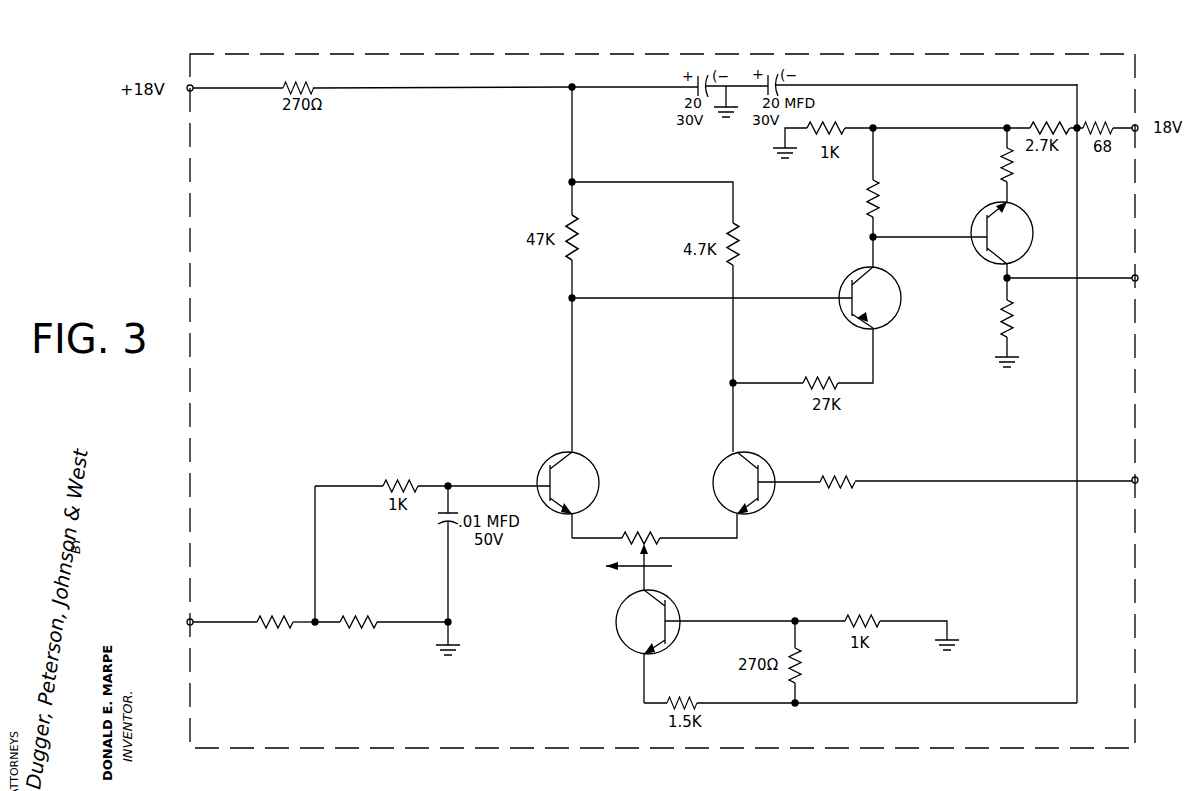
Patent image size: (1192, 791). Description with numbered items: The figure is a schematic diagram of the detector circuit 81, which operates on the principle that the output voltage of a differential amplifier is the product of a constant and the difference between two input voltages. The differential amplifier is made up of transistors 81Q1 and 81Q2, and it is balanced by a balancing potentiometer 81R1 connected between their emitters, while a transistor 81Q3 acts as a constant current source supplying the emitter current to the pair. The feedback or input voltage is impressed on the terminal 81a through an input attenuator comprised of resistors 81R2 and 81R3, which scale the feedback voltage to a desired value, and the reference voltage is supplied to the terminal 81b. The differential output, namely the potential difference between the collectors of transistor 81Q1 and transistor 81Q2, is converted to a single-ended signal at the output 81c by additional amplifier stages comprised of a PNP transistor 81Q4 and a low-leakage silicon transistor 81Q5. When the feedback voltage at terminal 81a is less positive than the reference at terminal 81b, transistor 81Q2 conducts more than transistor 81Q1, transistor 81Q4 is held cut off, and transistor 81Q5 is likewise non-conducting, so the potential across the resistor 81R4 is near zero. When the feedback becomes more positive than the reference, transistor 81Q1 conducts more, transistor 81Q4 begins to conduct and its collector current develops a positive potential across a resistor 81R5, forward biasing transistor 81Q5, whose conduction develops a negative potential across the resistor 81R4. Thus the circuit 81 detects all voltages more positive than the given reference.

The detector circuit 81 is at (380, 748).
The input terminal 81a is at (188, 627).
The input terminal 81b is at (1138, 477).
The output 81c is at (1139, 275).
The transistor 81Q1 is at (536, 495).
The transistor 81Q2 is at (724, 457).
The transistor 81Q3 is at (620, 642).
The transistor 81Q4 is at (898, 318).
The transistor 81Q5 is at (1017, 207).
The balancing potentiometer 81R1 is at (624, 534).
The resistor 81R2 is at (296, 592).
The resistor 81R3 is at (368, 616).
The resistor 81R4 is at (1013, 298).
The resistor 81R5 is at (880, 185).